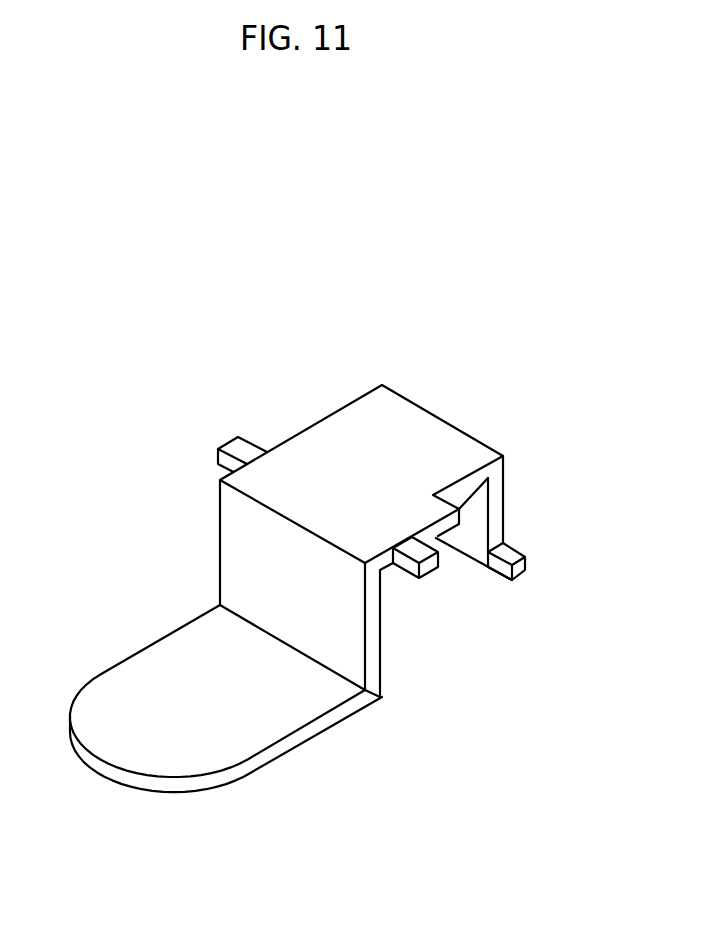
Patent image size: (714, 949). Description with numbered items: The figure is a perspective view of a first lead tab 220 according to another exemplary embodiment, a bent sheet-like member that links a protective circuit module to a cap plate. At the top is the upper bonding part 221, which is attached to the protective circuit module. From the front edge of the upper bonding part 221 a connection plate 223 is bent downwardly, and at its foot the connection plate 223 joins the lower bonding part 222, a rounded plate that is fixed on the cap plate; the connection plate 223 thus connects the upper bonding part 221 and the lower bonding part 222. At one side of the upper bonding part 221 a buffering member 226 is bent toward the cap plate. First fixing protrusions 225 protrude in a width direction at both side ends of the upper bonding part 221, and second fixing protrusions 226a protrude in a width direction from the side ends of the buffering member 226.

The first lead tab 220 is at (389, 313).
The upper bonding part 221 is at (332, 437).
The lower bonding part 222 is at (120, 683).
The connection plate 223 is at (240, 553).
The first fixing protrusions 225 is at (238, 447).
The buffering member 226 is at (483, 505).
The second fixing protrusions 226a is at (525, 563).